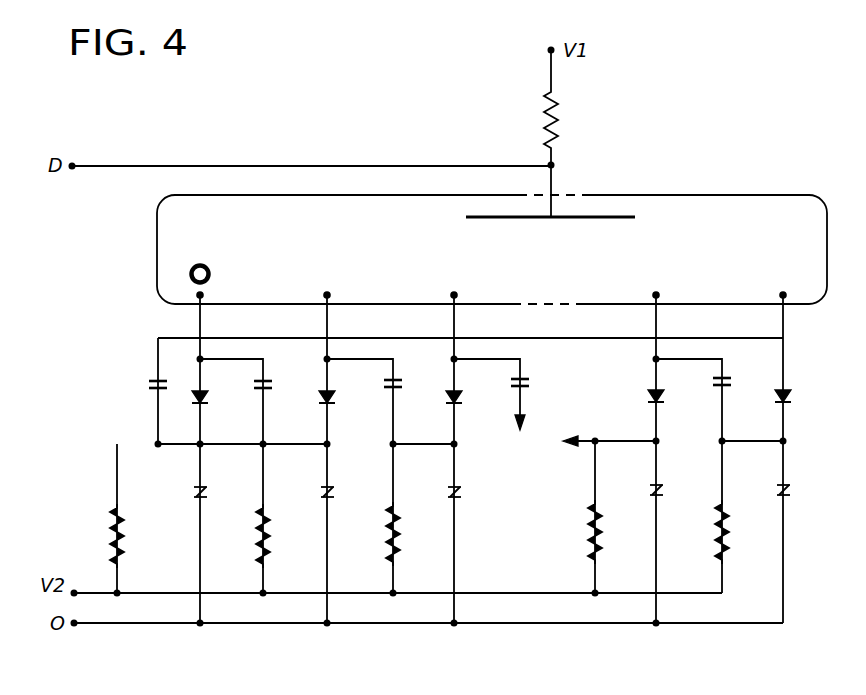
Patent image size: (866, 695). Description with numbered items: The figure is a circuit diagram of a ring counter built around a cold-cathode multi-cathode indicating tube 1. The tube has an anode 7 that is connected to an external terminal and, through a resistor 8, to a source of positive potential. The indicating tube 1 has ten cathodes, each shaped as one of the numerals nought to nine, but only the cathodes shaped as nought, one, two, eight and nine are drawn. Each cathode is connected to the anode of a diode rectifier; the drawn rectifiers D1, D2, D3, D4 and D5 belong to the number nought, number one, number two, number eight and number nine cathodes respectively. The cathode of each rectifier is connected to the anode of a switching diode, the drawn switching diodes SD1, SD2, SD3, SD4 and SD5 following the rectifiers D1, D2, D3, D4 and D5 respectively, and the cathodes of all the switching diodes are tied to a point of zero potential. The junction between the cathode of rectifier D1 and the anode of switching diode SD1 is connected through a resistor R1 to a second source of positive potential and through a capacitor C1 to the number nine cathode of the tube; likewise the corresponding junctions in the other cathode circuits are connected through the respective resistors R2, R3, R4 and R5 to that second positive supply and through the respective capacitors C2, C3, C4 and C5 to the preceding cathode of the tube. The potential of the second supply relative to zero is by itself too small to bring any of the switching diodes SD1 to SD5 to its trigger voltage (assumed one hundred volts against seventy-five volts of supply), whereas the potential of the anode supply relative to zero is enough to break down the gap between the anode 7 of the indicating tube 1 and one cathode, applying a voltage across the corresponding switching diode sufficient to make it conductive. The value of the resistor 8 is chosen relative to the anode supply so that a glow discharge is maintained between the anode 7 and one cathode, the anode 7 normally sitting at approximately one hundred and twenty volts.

The indicating tube 1 is at (501, 249).
The anode 7 is at (560, 216).
The resistor 8 is at (559, 120).
The capacitor C1 is at (145, 378).
The capacitor C2 is at (251, 378).
The capacitor C3 is at (380, 378).
The capacitor C4 is at (508, 378).
The capacitor C5 is at (710, 375).
The diode rectifier D1 is at (215, 403).
The diode rectifier D2 is at (342, 403).
The diode rectifier D3 is at (469, 403).
The diode rectifier D4 is at (671, 403).
The diode rectifier D5 is at (798, 403).
The switching diode SD1 is at (222, 490).
The switching diode SD2 is at (349, 490).
The switching diode SD3 is at (476, 490).
The switching diode SD4 is at (678, 488).
The switching diode SD5 is at (806, 488).
The resistor R1 is at (134, 536).
The resistor R2 is at (280, 536).
The resistor R3 is at (409, 534).
The resistor R4 is at (612, 532).
The resistor R5 is at (738, 532).